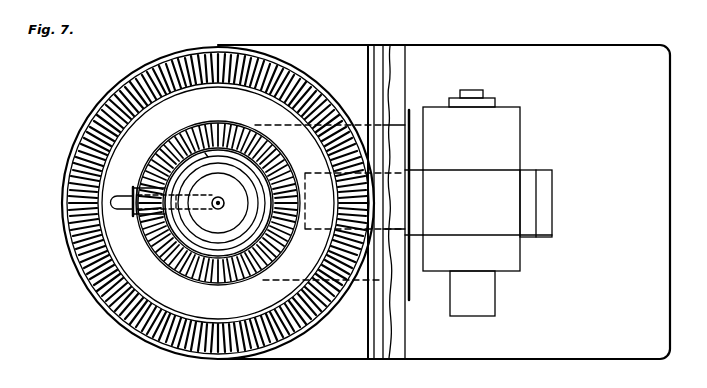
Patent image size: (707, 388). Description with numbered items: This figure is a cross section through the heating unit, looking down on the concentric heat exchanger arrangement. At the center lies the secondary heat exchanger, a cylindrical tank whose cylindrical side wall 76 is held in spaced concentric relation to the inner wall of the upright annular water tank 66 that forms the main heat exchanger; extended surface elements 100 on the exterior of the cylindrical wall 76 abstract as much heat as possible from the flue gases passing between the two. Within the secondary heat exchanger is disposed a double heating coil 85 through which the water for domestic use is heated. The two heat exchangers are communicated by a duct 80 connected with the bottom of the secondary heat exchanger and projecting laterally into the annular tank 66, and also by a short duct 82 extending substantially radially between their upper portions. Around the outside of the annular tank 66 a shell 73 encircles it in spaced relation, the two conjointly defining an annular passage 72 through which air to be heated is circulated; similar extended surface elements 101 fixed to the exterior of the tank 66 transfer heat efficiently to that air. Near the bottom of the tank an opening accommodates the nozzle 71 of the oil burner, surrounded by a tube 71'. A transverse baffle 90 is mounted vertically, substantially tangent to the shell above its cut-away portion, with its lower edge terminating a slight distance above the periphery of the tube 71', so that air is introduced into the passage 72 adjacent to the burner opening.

The annular water tank 66 is at (128, 263).
The nozzle 71 is at (354, 189).
The tube 71' is at (424, 209).
The annular passage 72 is at (117, 315).
The shell 73 is at (168, 351).
The cylindrical side wall 76 is at (216, 290).
The duct 80 is at (134, 190).
The short duct 82 is at (143, 218).
The double heating coil 85 is at (232, 176).
The transverse baffle 90 is at (368, 333).
The extended surface elements 100 is at (187, 282).
The extended surface elements 101 is at (100, 292).